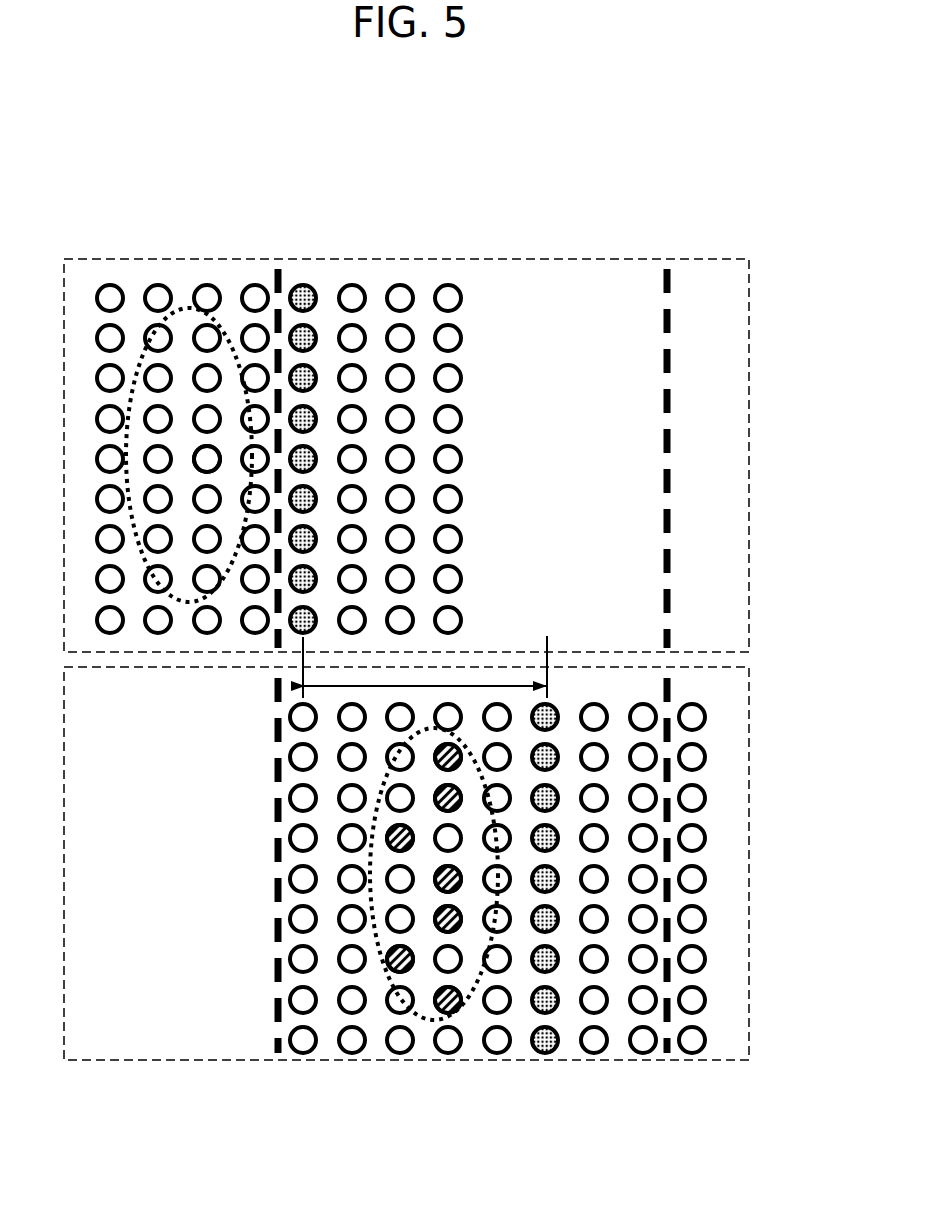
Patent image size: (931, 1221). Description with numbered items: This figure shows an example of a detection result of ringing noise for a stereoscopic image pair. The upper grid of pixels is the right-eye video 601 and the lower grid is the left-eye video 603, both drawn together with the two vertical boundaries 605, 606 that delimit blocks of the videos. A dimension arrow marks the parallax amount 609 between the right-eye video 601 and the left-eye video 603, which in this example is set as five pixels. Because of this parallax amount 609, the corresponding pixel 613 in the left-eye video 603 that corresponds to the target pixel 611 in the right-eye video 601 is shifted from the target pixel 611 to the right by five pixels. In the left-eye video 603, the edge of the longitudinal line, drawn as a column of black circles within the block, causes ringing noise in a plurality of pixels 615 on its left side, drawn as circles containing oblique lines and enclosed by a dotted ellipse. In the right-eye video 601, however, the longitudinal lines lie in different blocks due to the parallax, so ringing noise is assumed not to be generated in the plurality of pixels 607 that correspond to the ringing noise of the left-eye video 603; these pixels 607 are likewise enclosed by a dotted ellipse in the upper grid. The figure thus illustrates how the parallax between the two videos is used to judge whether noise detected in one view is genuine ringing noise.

The right-eye video 601 is at (748, 317).
The left-eye video 603 is at (748, 1020).
The boundary 605 is at (279, 292).
The boundary 606 is at (670, 287).
The plurality of pixels 607 is at (228, 330).
The parallax amount 609 is at (489, 686).
The target pixel 611 is at (210, 463).
The corresponding pixel 613 is at (450, 883).
The plurality of pixels 615 is at (432, 1020).